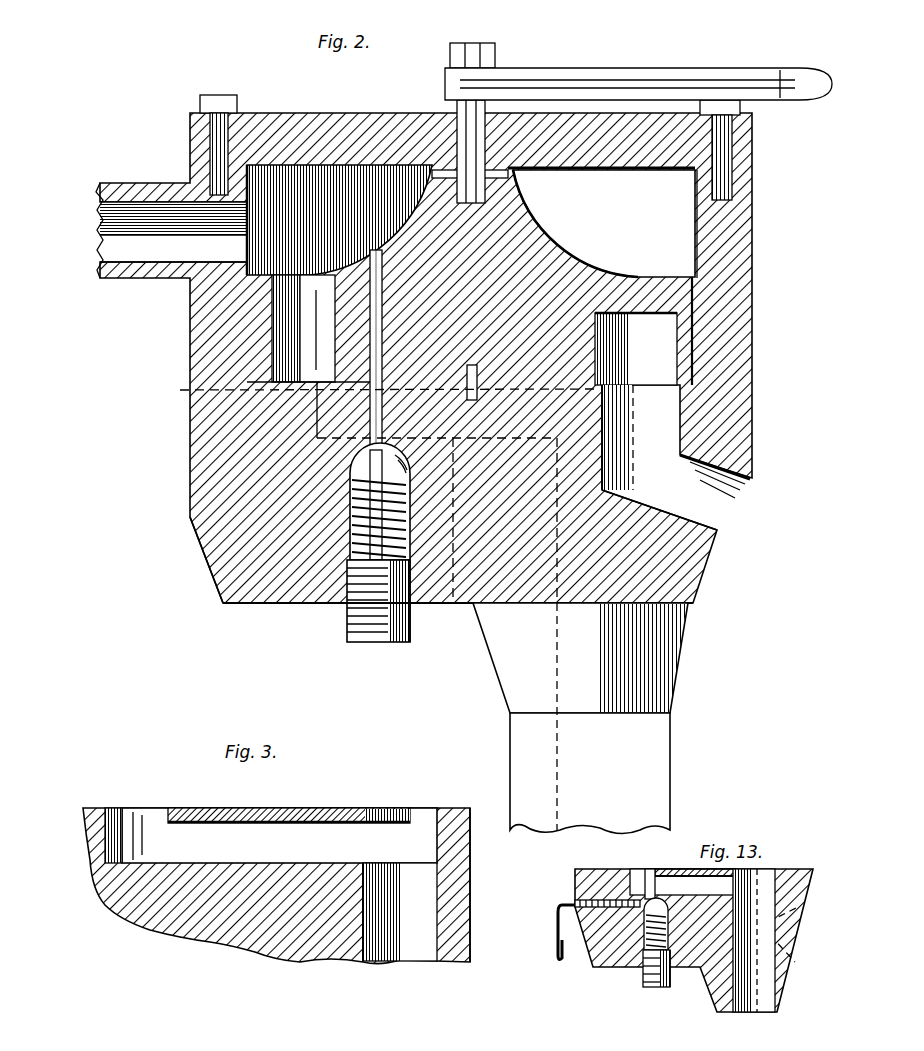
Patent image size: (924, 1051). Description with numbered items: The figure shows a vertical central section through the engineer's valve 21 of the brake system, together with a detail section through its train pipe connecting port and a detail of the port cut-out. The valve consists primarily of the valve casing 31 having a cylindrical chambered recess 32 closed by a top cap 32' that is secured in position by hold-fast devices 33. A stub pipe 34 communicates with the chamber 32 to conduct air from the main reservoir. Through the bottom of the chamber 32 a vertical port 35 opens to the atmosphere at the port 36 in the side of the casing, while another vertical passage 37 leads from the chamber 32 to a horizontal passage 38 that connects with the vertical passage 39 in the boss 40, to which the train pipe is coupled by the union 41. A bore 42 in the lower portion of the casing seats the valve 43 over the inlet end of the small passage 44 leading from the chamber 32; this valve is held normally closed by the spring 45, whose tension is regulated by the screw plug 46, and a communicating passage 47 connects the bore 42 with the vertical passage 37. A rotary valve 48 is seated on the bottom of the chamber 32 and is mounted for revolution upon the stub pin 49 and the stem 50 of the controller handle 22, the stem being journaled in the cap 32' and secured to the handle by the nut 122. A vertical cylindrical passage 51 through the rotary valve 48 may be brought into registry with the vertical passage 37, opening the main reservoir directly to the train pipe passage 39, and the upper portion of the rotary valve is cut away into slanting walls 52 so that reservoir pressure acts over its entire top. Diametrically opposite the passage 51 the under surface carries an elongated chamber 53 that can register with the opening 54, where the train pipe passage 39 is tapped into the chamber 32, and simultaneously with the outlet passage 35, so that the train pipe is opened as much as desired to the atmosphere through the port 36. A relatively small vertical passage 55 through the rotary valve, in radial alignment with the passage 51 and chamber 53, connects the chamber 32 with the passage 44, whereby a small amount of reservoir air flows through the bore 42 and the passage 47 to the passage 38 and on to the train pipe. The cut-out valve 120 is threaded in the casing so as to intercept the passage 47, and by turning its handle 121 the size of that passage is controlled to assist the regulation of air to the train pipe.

In FIG. 2, the engineer's valve 21 is at (350, 462).
In FIG. 3, the engineer's valve 21 is at (470, 882).
In FIG. 13, the engineer's valve 21 is at (694, 940).
In FIG. 2, the controller handle 22 is at (810, 68).
In FIG. 2, the valve casing 31 is at (738, 251).
In FIG. 3, the valve casing 31 is at (222, 946).
In FIG. 2, the cylindrical chambered recess 32 is at (757, 224).
In FIG. 2, the top cap 32' is at (556, 143).
In FIG. 2, the hold-fast devices 33 is at (237, 99).
In FIG. 2, the stub pipe 34 is at (145, 265).
In FIG. 2, the vertical port 35 is at (668, 412).
In FIG. 2, the port 36 is at (727, 512).
In FIG. 13, the port 36 is at (798, 958).
In FIG. 2, the vertical passage 37 is at (366, 387).
In FIG. 3, the vertical passage 37 is at (120, 818).
In FIG. 13, the vertical passage 37 is at (690, 884).
In FIG. 2, the horizontal passage 38 is at (440, 604).
In FIG. 3, the horizontal passage 38 is at (280, 838).
In FIG. 2, the vertical passage 39 is at (557, 655).
In FIG. 3, the vertical passage 39 is at (406, 935).
In FIG. 13, the vertical passage 39 is at (750, 1012).
In FIG. 2, the boss 40 is at (685, 680).
In FIG. 2, the union 41 is at (670, 789).
In FIG. 2, the bore 42 is at (348, 600).
In FIG. 2, the valve 43 is at (205, 528).
In FIG. 13, the valve 43 is at (656, 885).
In FIG. 2, the small passage 44 is at (363, 417).
In FIG. 2, the spring 45 is at (366, 642).
In FIG. 13, the spring 45 is at (650, 952).
In FIG. 2, the screw plug 46 is at (410, 628).
In FIG. 13, the screw plug 46 is at (670, 982).
In FIG. 2, the communicating passage 47 is at (350, 470).
In FIG. 13, the communicating passage 47 is at (640, 900).
In FIG. 2, the rotary valve 48 is at (697, 222).
In FIG. 2, the stub pin 49 is at (477, 372).
In FIG. 2, the stem 50 is at (432, 178).
In FIG. 2, the vertical cylindrical passage 51 is at (318, 272).
In FIG. 2, the slanting walls 52 is at (540, 224).
In FIG. 2, the elongated chamber 53 is at (672, 330).
In FIG. 3, the opening 54 is at (412, 816).
In FIG. 2, the small vertical passage 55 is at (378, 297).
In FIG. 13, the cut-out valve 120 is at (600, 900).
In FIG. 13, the handle 121 is at (556, 937).
In FIG. 2, the nut 122 is at (495, 52).